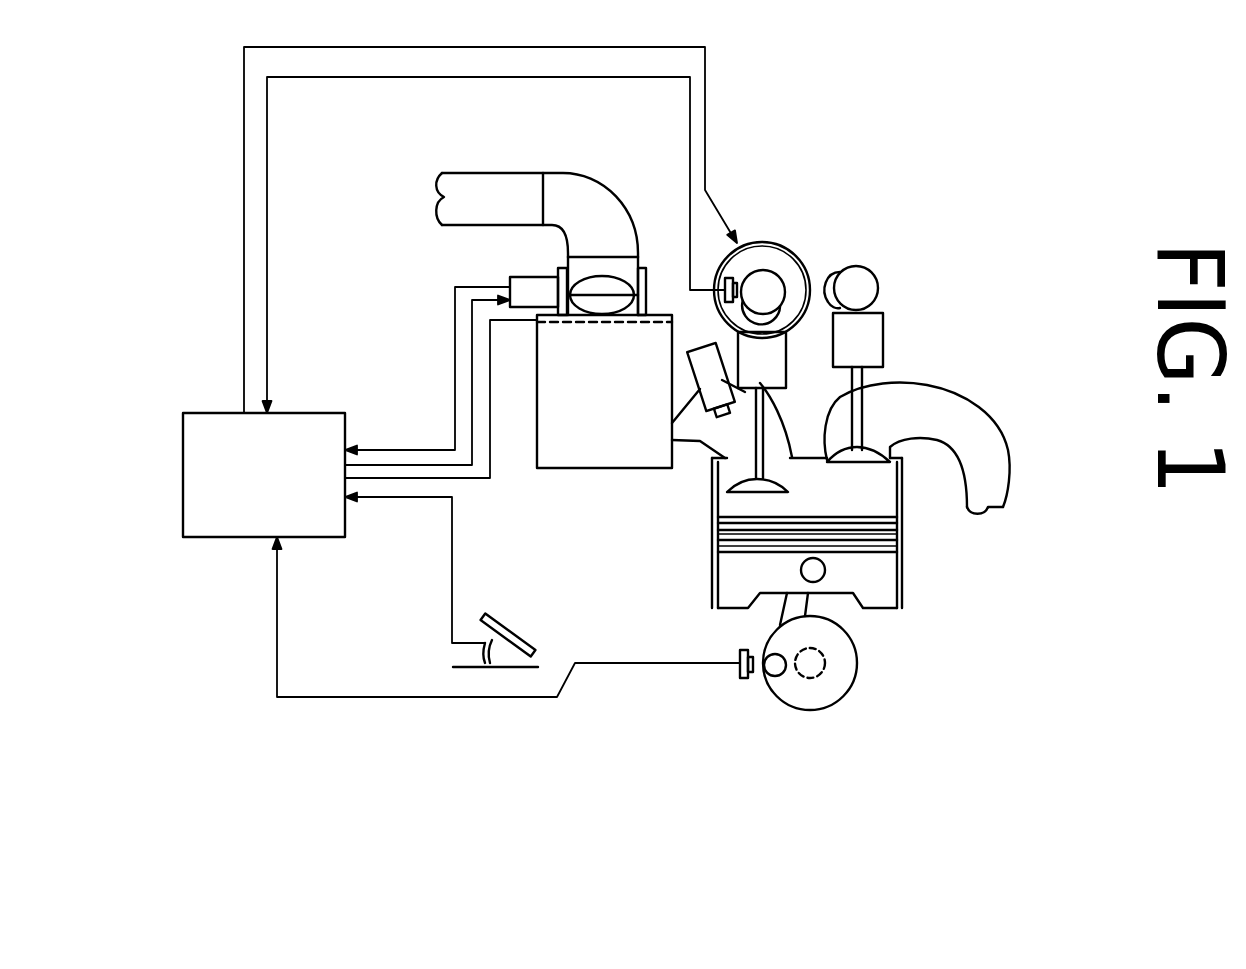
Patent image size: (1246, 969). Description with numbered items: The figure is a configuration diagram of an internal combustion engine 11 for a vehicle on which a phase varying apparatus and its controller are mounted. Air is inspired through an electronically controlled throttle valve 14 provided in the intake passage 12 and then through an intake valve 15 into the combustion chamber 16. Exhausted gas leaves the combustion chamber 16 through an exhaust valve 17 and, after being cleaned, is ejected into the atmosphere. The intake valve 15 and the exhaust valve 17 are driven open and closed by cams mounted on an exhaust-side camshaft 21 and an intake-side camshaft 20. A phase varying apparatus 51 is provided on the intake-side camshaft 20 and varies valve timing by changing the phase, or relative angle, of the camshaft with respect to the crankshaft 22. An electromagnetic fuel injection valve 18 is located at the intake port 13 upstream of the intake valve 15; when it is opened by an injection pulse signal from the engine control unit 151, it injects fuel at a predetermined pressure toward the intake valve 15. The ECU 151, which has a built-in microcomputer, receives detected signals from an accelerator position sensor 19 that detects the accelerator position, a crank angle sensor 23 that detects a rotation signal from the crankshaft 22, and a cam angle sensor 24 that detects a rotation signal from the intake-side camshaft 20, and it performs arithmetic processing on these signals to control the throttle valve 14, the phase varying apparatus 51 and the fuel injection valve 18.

The engine 11 is at (690, 563).
The intake passage 12 is at (580, 178).
The intake port 13 is at (693, 441).
The electronically controlled throttle valve 14 is at (532, 270).
The intake valve 15 is at (786, 402).
The combustion chamber 16 is at (897, 497).
The exhaust valve 17 is at (893, 385).
The electromagnetic fuel injection valve 18 is at (672, 423).
The accelerator position sensor 19 is at (470, 671).
The intake-side camshaft 20 is at (771, 282).
The exhaust-side camshaft 21 is at (866, 272).
The crankshaft 22 is at (826, 658).
The crank angle sensor 23 is at (738, 677).
The cam angle sensor 24 is at (722, 279).
The phase varying apparatus 51 is at (763, 231).
The engine control unit (ECU) 151 is at (211, 538).